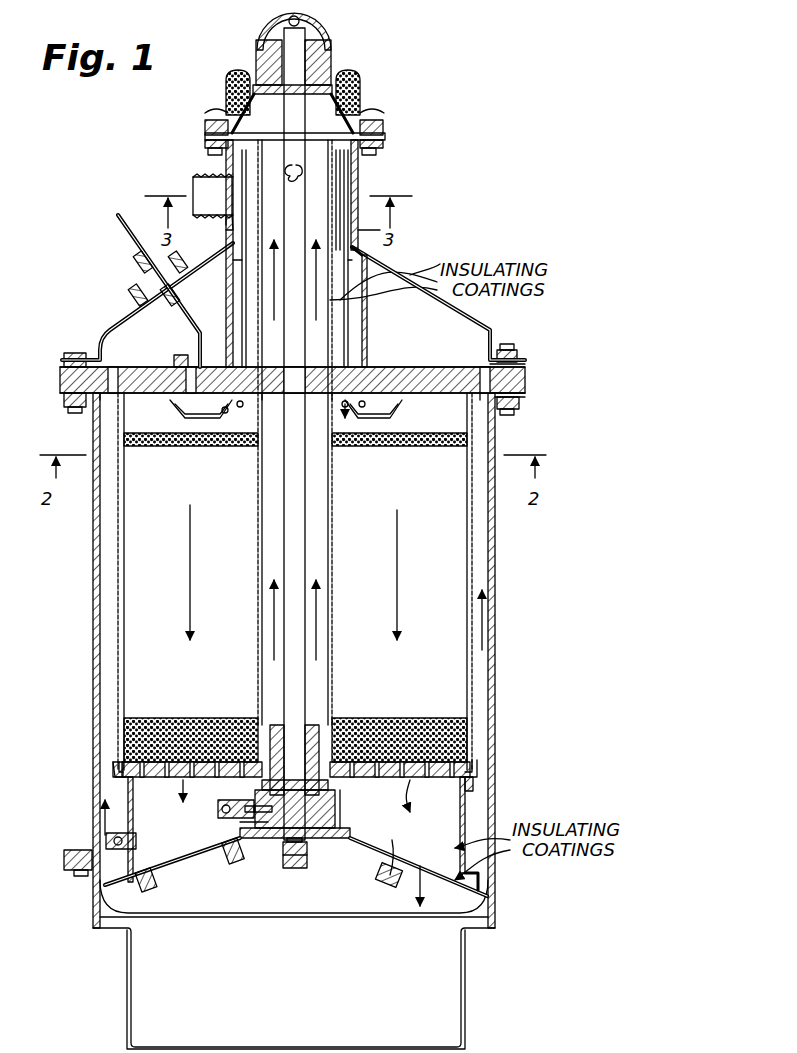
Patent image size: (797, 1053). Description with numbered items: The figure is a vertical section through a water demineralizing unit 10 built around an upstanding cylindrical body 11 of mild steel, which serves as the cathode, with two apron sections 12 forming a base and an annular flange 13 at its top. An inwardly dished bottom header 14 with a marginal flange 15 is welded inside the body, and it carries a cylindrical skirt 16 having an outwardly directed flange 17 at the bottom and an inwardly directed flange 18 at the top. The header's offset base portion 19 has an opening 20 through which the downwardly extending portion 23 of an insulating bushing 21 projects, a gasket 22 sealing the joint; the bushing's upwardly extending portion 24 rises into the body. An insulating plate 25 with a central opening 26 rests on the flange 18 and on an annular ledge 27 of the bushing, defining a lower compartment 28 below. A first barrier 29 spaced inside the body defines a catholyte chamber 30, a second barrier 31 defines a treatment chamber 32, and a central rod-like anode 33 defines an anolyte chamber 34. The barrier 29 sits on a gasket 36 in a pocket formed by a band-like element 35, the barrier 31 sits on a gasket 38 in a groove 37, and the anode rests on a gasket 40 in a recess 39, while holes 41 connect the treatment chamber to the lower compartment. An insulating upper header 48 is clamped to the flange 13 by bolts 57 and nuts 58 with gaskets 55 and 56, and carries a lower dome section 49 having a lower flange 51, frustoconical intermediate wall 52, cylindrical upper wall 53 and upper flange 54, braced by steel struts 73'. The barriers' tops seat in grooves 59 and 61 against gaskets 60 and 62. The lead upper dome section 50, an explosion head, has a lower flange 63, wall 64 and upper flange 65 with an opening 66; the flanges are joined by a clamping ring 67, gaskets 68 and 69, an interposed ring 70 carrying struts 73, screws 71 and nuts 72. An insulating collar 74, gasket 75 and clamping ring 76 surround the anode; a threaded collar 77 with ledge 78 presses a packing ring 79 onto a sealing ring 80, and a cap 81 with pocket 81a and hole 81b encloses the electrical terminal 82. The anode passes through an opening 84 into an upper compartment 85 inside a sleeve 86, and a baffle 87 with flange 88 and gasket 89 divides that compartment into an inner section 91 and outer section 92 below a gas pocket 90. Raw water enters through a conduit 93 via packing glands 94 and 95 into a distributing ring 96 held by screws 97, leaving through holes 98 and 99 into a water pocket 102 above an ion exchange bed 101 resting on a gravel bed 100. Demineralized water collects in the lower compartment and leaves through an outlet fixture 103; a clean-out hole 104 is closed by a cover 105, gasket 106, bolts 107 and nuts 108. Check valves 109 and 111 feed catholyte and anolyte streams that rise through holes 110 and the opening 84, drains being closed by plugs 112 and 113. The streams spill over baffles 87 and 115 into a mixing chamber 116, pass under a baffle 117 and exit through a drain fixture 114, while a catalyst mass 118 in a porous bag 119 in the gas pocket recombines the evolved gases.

The water demineralizing unit 10 is at (474, 200).
The cylindrical body 11 is at (493, 600).
The apron sections 12 is at (462, 990).
The annular flange 13 is at (522, 400).
The bottom header 14 is at (380, 862).
The marginal flange 15 is at (445, 906).
The cylindrical skirt 16 is at (458, 822).
The outwardly directed annular flange 17 is at (482, 876).
The inwardly directed annular flange 18 is at (425, 795).
The base portion 19 is at (318, 840).
The opening 20 is at (286, 842).
The insulating bushing 21 is at (352, 802).
The gasket 22 is at (350, 838).
The downwardly extending portion 23 is at (308, 850).
The upwardly extending portion 24 is at (332, 700).
The insulating plate 25 is at (440, 760).
The central opening 26 is at (360, 762).
The annular ledge 27 is at (392, 762).
The lower compartment 28 is at (180, 840).
The first cylindrical barrier 29 is at (126, 528).
The catholyte chamber 30 is at (102, 575).
The second cylindrical barrier 31 is at (332, 575).
The treatment chamber 32 is at (232, 560).
The anode 33 is at (300, 535).
The anolyte chamber 34 is at (315, 492).
The band-like element 35 is at (480, 770).
The sealing gasket 36 is at (478, 790).
The annular groove 37 is at (338, 796).
The sealing gasket 38 is at (235, 793).
The cylindrical recess 39 is at (292, 720).
The sealing gasket 40 is at (280, 724).
The holes 41 is at (158, 776).
The upper header 48 is at (527, 376).
The lower dome section 49 is at (414, 284).
The upper dome section 50 is at (226, 88).
The lower annular flange 51 is at (518, 360).
The intermediate wall 52 is at (196, 268).
The upper wall 53 is at (362, 172).
The upper annular flange 54 is at (378, 152).
The sealing gasket 55 is at (530, 396).
The sealing gasket 56 is at (530, 362).
The bolts 57 is at (510, 344).
The nuts 58 is at (515, 410).
The annular groove 59 is at (118, 396).
The sealing gasket 60 is at (108, 368).
The annular groove 61 is at (334, 398).
The sealing gasket 62 is at (318, 366).
The lower annular flange 63 is at (384, 118).
The wall 64 is at (360, 80).
The upper annular flange 65 is at (292, 88).
The opening 66 is at (306, 94).
The clamping ring 67 is at (205, 116).
The lower sealing gasket 68 is at (384, 142).
The upper sealing gasket 69 is at (384, 126).
The interposed ring 70 is at (205, 140).
The screws 71 is at (212, 122).
The nuts 72 is at (208, 153).
The struts 73 is at (295, 126).
The steel struts 73' is at (388, 311).
The insulating collar 74 is at (330, 62).
The gasket 75 is at (332, 68).
The clamping ring 76 is at (252, 113).
The insulating collar 77 is at (256, 55).
The annular ledge 78 is at (256, 46).
The packing ring 79 is at (297, 59).
The sealing ring 80 is at (297, 73).
The insulating cap 81 is at (250, 36).
The pocket 81a is at (316, 36).
The central hole 81b is at (272, 20).
The electrical terminal 82 is at (315, 22).
The opening 84 is at (262, 393).
The upper compartment 85 is at (420, 314).
The insulating sleeve 86 is at (297, 173).
The cylindrical baffle 87 is at (258, 320).
The annular flange 88 is at (346, 366).
The sealing gasket 89 is at (252, 366).
The gas pocket 90 is at (345, 118).
The inner section 91 is at (270, 330).
The outer section 92 is at (362, 262).
The insulating conduit 93 is at (133, 264).
The packing gland 94 is at (135, 296).
The packing gland 95 is at (178, 358).
The distributing ring 96 is at (188, 408).
The screws 97 is at (382, 386).
The inner holes 98 is at (370, 428).
The outer holes 99 is at (398, 400).
The gravel bed 100 is at (124, 748).
The ion exchange bed 101 is at (124, 440).
The water pocket 102 is at (160, 438).
The outlet fixture 103 is at (398, 880).
The clean-out hole 104 is at (175, 862).
The removable cover 105 is at (158, 872).
The sealing gasket 106 is at (236, 852).
The bolts 107 is at (240, 814).
The nuts 108 is at (230, 866).
The check valve 109 is at (140, 840).
The holes 110 is at (106, 362).
The check valve 111 is at (189, 801).
The removable plug 112 is at (86, 870).
The removable plug 113 is at (294, 870).
The drain fixture 114 is at (218, 222).
The cylindrical baffle 115 is at (360, 196).
The mixing chamber 116 is at (342, 180).
The downwardly directed baffle 117 is at (238, 200).
The catalyst mass 118 is at (226, 80).
The porous bag 119 is at (360, 90).